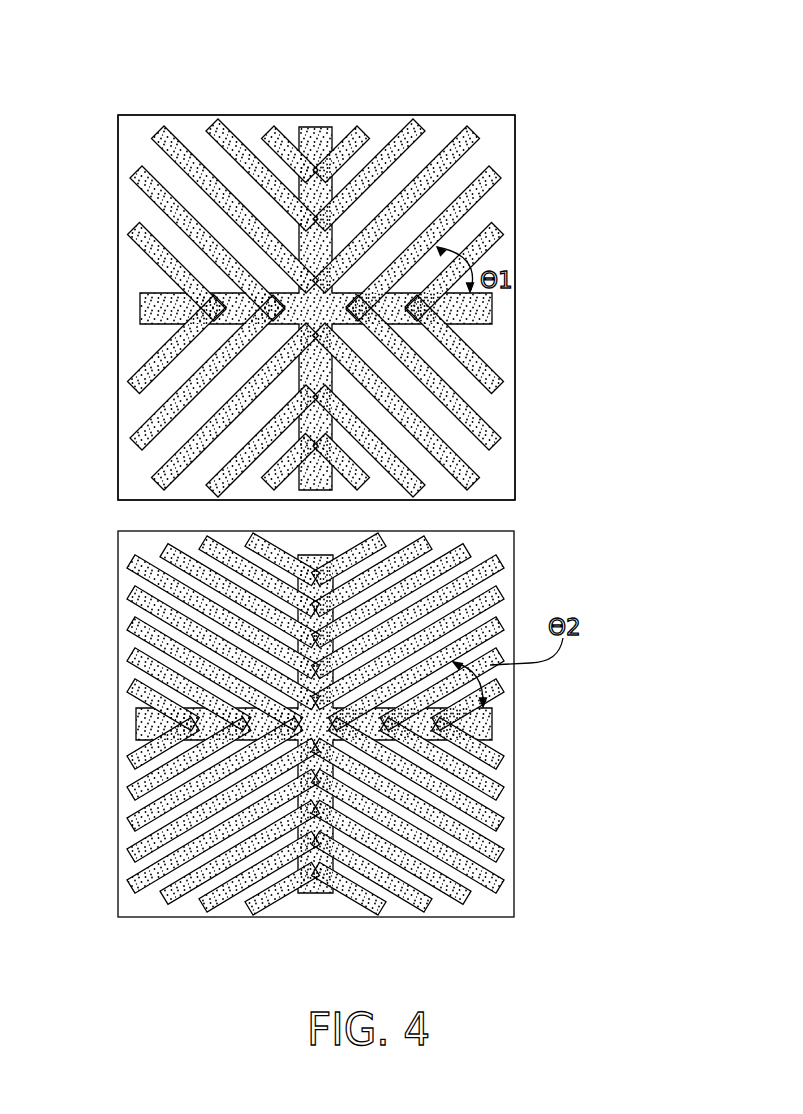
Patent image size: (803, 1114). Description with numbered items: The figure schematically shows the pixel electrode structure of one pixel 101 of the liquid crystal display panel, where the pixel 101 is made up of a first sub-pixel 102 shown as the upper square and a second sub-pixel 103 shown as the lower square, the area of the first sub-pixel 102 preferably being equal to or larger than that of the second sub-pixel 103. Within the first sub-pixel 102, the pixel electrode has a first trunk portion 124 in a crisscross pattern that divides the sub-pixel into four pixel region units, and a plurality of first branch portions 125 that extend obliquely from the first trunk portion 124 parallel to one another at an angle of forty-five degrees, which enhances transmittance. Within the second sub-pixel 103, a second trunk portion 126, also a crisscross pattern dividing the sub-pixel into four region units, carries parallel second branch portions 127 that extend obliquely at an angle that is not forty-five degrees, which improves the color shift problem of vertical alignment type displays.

The pixel 101 is at (524, 212).
The first sub-pixel 102 is at (515, 428).
The second sub-pixel 103 is at (514, 812).
The first trunk portion 124 is at (343, 119).
The first branch portions 125 is at (483, 125).
The second trunk portion 126 is at (492, 732).
The second branch portions 127 is at (494, 577).